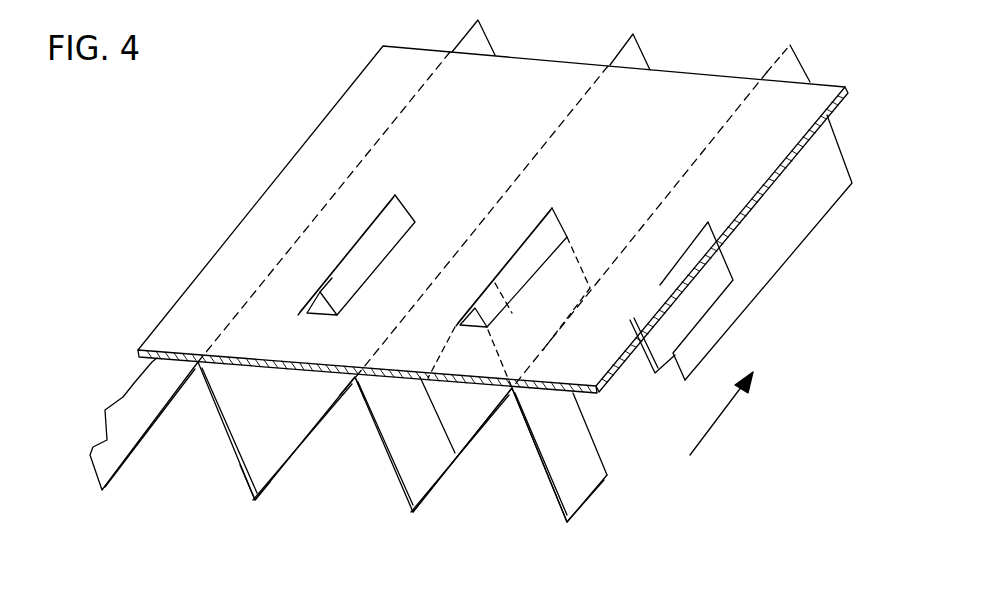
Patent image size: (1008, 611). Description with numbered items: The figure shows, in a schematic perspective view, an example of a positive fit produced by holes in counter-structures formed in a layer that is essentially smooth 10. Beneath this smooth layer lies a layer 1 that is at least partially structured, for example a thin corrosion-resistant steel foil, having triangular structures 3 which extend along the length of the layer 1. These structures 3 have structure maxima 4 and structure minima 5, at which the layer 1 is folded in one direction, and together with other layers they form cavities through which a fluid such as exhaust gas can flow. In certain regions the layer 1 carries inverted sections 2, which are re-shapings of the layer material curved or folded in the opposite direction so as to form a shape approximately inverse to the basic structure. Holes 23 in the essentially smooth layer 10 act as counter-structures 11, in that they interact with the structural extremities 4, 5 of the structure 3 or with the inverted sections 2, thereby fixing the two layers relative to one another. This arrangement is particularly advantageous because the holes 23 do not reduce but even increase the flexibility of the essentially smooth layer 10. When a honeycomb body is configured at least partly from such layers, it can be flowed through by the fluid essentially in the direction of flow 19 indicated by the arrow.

The layer 1 is at (471, 346).
The inverted section 2 is at (707, 293).
The structure 3 is at (530, 443).
The structure maximum 4 is at (350, 385).
The structure minimum 5 is at (254, 503).
The layer that is essentially smooth 10 is at (778, 120).
The counter-structure 11 is at (305, 318).
The direction of flow 19 is at (768, 413).
The hole 23 is at (567, 237).